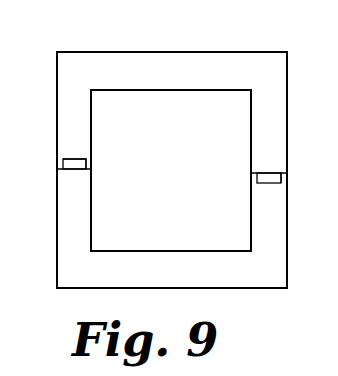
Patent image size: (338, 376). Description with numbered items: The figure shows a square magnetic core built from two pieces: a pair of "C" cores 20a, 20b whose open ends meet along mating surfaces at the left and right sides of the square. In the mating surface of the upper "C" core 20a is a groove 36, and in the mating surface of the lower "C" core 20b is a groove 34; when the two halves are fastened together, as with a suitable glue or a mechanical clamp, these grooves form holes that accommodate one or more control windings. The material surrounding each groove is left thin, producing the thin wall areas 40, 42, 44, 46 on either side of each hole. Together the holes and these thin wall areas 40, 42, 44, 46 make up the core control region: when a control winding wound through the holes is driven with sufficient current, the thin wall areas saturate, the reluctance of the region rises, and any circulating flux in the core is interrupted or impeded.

The "C" core 20a is at (218, 51).
The "C" core 20b is at (86, 289).
The groove 34 is at (267, 181).
The groove 36 is at (76, 158).
The thin wall area 40 is at (88, 163).
The thin wall area 42 is at (254, 178).
The thin wall area 44 is at (284, 178).
The thin wall area 46 is at (60, 163).